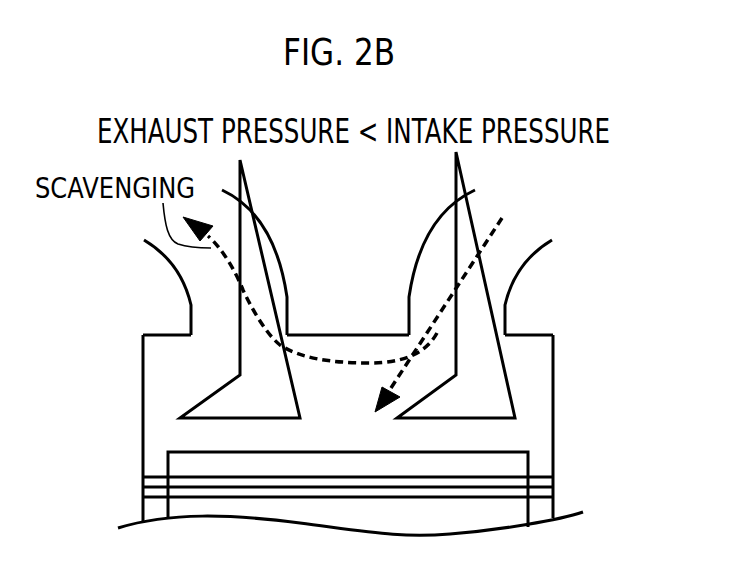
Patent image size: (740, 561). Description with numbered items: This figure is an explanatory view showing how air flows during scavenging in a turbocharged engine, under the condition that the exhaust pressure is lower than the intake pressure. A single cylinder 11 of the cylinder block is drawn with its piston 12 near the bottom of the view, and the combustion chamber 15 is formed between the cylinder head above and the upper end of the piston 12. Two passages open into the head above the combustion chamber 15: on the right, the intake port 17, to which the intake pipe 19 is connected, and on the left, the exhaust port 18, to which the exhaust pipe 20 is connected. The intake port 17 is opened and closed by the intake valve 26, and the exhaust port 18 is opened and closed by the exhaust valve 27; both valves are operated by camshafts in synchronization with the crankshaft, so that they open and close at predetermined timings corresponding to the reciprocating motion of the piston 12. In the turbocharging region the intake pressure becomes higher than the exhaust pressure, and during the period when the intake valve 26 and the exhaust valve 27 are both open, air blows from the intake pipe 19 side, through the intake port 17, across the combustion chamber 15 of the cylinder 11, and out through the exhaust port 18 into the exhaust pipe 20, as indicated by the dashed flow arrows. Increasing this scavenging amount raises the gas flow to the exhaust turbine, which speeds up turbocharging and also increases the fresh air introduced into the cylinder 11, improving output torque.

The cylinder 11 is at (552, 444).
The piston 12 is at (503, 517).
The combustion chamber 15 is at (182, 435).
The intake port 17 is at (492, 290).
The exhaust port 18 is at (203, 288).
The intake pipe 19 is at (550, 245).
The exhaust pipe 20 is at (263, 236).
The intake valve 26 is at (490, 393).
The exhaust valve 27 is at (207, 395).